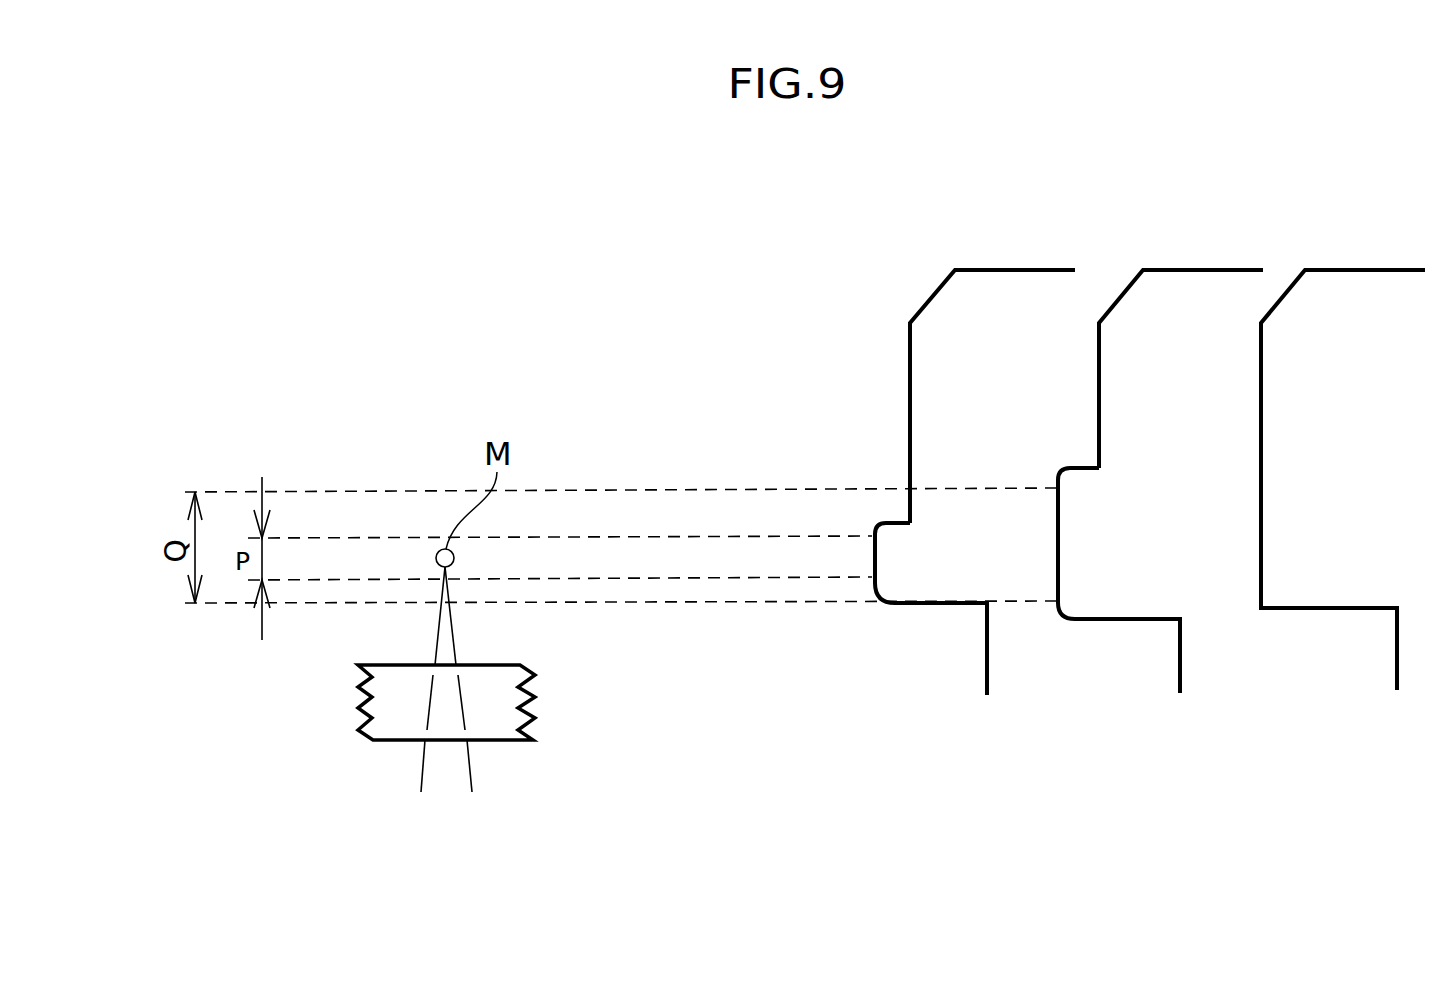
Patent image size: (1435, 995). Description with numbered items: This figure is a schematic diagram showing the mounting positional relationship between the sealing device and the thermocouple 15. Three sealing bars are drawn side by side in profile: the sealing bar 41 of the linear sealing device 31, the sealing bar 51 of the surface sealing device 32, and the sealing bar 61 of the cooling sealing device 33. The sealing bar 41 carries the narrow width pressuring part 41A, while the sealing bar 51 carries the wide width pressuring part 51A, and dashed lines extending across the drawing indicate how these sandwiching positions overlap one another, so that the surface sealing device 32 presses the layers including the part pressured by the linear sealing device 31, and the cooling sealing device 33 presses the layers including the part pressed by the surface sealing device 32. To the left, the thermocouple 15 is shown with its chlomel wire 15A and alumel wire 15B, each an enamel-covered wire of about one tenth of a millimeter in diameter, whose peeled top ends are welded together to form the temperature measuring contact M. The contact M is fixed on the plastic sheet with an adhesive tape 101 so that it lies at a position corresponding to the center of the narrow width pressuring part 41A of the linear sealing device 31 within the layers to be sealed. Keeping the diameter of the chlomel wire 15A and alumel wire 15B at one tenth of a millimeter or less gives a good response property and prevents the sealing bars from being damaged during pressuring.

The thermocouple 15 is at (430, 642).
The chlomel wire 15A is at (422, 773).
The alumel wire 15B is at (470, 772).
The adhesive tape 101 is at (393, 703).
The linear sealing device 31 is at (1000, 264).
The surface sealing device 32 is at (1190, 264).
The cooling sealing device 33 is at (1358, 264).
The sealing bar 41 is at (932, 380).
The narrow width pressuring part 41A is at (875, 556).
The sealing bar 51 is at (1122, 380).
The wide width pressuring part 51A is at (1057, 555).
The sealing bar 61 is at (1282, 380).